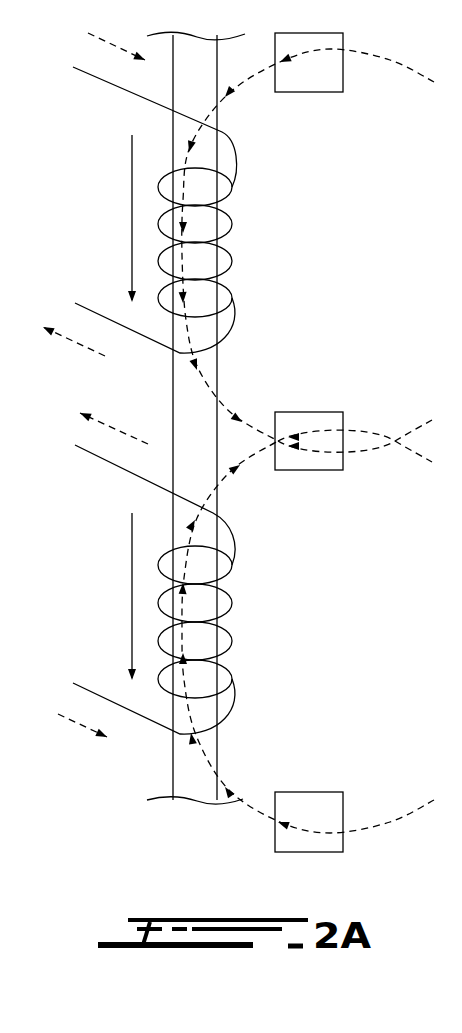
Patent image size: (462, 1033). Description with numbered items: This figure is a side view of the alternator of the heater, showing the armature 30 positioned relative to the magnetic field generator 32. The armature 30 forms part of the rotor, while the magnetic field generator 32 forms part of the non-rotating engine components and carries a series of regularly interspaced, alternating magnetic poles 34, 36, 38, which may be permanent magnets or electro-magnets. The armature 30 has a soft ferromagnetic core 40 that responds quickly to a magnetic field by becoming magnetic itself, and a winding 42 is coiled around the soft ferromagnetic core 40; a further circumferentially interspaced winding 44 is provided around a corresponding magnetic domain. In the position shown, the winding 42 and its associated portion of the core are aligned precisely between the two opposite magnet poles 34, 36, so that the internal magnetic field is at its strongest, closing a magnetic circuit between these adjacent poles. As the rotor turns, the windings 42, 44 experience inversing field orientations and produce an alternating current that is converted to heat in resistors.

The armature 30 is at (243, 847).
The magnetic field generator 32 is at (375, 847).
The magnetic pole 34 is at (343, 92).
The magnetic pole 36 is at (343, 470).
The magnetic pole 38 is at (343, 802).
The soft ferromagnetic core 40 is at (198, 252).
The winding 42 is at (237, 207).
The winding 44 is at (233, 583).